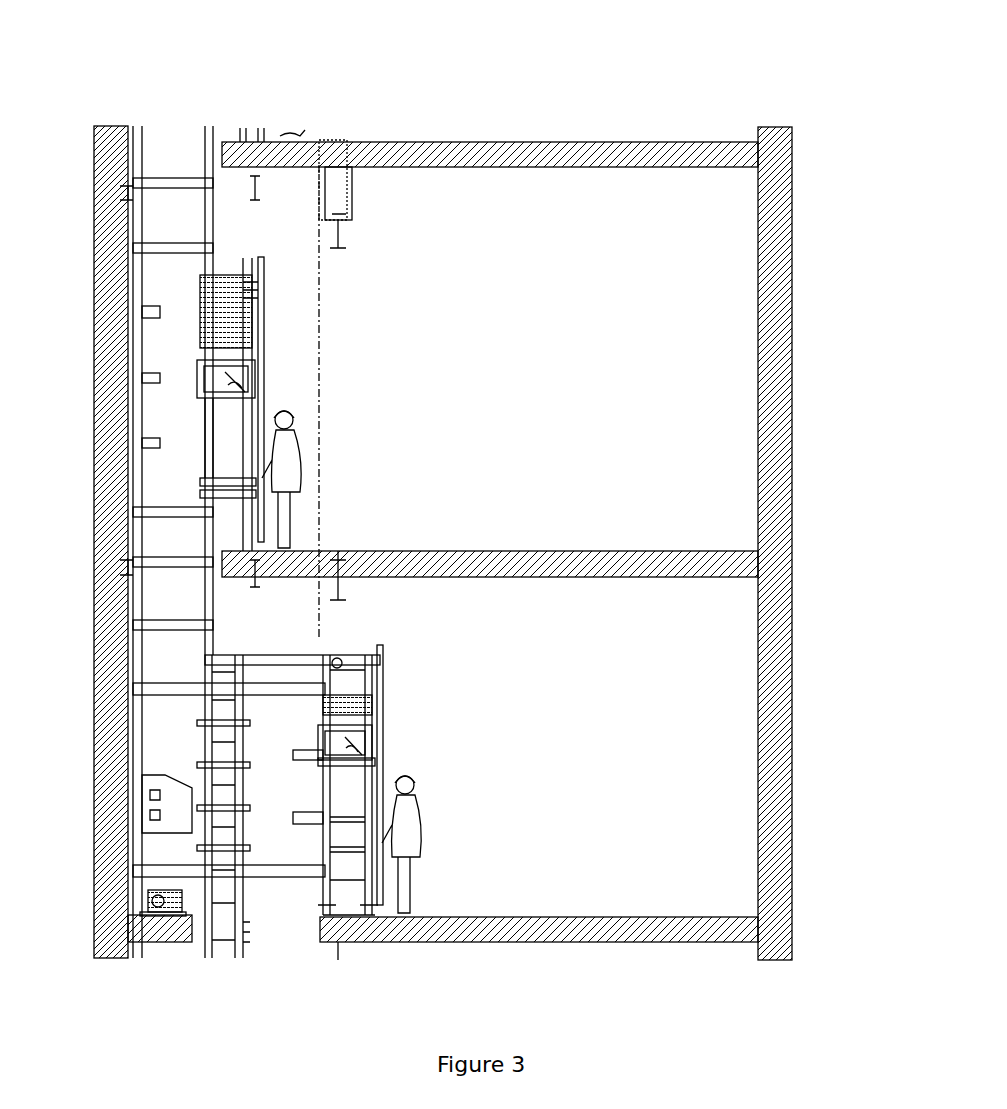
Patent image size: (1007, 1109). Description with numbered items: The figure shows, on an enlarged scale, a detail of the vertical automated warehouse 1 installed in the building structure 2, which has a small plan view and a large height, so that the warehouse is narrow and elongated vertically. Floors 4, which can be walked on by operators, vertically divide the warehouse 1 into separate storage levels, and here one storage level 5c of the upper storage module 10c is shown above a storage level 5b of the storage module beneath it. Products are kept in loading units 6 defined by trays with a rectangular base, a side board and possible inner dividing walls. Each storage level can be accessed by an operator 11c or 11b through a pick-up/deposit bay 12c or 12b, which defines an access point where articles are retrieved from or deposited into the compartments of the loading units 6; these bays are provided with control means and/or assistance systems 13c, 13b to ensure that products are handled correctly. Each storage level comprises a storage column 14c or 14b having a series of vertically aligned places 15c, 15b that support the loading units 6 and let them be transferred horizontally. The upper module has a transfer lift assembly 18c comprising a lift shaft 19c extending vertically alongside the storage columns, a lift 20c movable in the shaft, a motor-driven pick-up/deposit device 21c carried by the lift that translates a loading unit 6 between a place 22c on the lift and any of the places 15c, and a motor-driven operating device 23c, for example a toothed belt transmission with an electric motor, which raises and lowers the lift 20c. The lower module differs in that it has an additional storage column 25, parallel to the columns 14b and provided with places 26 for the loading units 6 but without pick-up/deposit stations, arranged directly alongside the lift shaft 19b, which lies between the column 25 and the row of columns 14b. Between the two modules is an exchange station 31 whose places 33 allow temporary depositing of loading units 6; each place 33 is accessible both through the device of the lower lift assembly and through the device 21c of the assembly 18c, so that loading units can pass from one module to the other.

The vertical automated warehouse 1 is at (85, 82).
The building structure 2 is at (792, 322).
The floors 4 is at (690, 155).
The storage level 5b is at (660, 762).
The storage level 5c is at (710, 400).
The loading unit 6 is at (228, 290).
The storage module 10c is at (690, 292).
The operator 11b is at (418, 830).
The operator 11c is at (300, 460).
The pick-up/deposit bay 12b is at (352, 800).
The pick-up/deposit bay 12c is at (230, 475).
The control means and/or assistance systems 13b is at (372, 743).
The control means and/or assistance systems 13c is at (250, 385).
The storage column 14b is at (368, 653).
The storage column 14c is at (272, 255).
The places 15b is at (376, 708).
The places 15c is at (256, 300).
The transfer lift assembly 18c is at (128, 722).
The lift shaft 19b is at (298, 728).
The lift shaft 19c is at (168, 668).
The lift 20c is at (140, 825).
The motor-driven pick-up/deposit device 21c is at (188, 790).
The place 22c is at (142, 780).
The motor-driven operating device 23c is at (150, 905).
The additional storage column 25 is at (243, 967).
The places 26 is at (252, 942).
The exchange station 31 is at (250, 728).
The places 33 is at (252, 845).